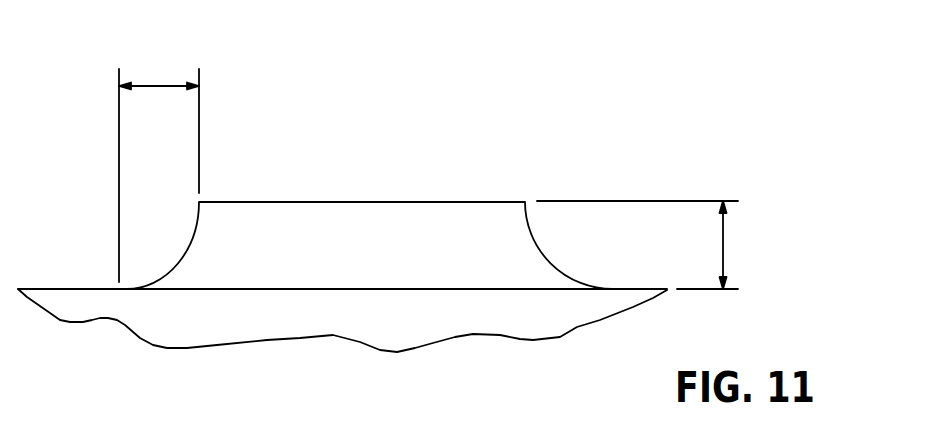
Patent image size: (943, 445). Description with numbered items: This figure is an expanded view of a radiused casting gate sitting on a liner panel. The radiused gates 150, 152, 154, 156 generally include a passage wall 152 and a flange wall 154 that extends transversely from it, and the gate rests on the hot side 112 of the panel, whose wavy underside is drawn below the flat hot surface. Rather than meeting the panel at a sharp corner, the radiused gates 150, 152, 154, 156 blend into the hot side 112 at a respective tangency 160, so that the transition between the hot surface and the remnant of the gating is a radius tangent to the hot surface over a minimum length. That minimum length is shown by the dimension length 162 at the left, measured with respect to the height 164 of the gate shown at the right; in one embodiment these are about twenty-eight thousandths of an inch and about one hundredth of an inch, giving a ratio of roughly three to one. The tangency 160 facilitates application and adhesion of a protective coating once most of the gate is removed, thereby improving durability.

The hot side 112 is at (83, 288).
The radiused gate 150 is at (370, 187).
The passage wall 152 is at (370, 187).
The flange wall 154 is at (370, 187).
The radiused gate 156 is at (403, 201).
The tangency 160 is at (127, 290).
The length 162 is at (157, 83).
The height 164 is at (723, 237).